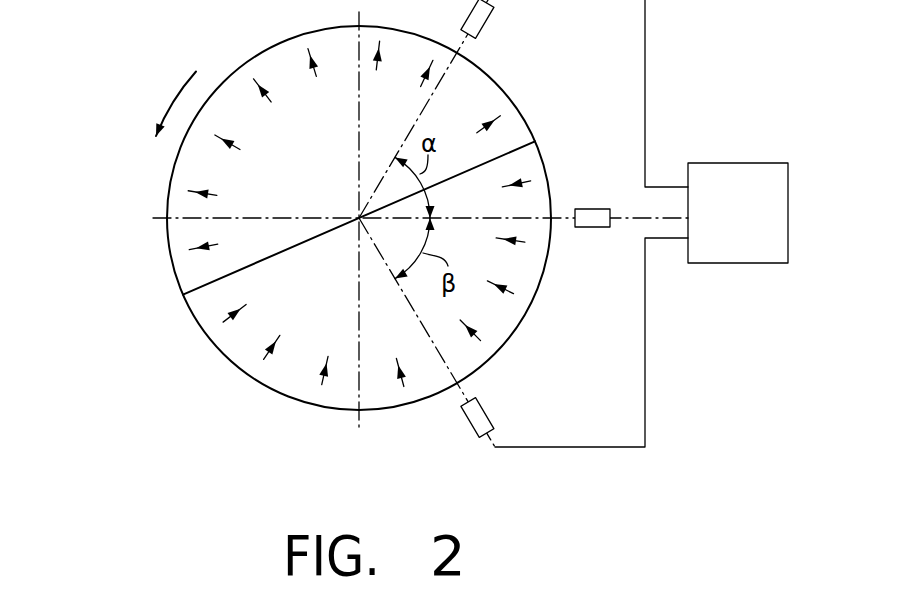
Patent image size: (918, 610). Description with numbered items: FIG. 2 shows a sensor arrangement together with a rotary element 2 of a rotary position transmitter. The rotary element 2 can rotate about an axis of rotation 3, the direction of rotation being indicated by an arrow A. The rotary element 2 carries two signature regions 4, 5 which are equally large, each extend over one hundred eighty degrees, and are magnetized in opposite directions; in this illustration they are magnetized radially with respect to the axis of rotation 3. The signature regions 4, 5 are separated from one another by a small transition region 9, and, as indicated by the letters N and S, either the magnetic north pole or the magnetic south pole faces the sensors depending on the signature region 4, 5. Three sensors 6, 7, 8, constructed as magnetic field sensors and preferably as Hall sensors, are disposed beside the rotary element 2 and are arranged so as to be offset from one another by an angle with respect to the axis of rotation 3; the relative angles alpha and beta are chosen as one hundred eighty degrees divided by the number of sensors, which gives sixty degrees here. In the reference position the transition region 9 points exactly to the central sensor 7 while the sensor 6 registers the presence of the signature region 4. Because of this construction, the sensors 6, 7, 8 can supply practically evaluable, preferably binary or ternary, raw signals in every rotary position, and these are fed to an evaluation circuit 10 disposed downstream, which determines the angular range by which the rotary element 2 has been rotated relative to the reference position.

The rotary element 2 is at (170, 282).
The axis of rotation 3 is at (358, 216).
The signature region 4 is at (193, 162).
The signature region 5 is at (242, 348).
The magnetic field sensor 6 is at (488, 22).
The magnetic field sensor 7 is at (590, 208).
The magnetic field sensor 8 is at (488, 412).
The transition region 9 is at (477, 163).
The evaluation circuit 10 is at (718, 162).
The arrow A is at (177, 92).